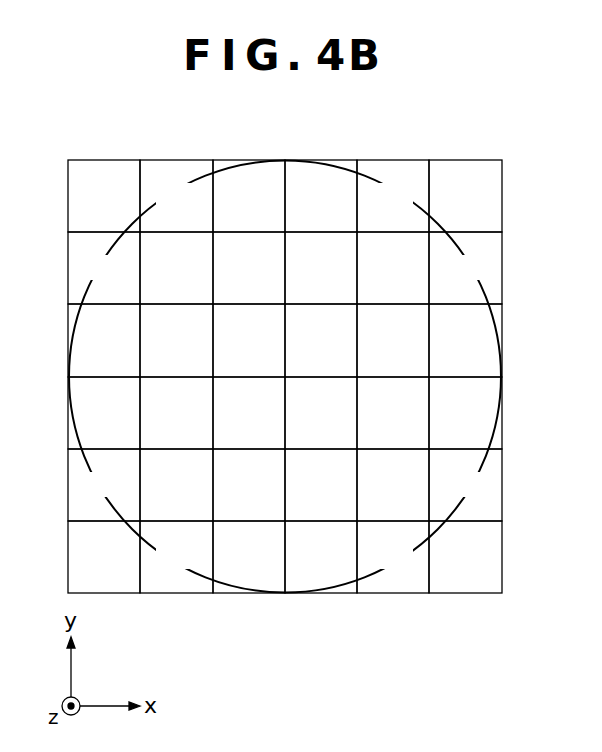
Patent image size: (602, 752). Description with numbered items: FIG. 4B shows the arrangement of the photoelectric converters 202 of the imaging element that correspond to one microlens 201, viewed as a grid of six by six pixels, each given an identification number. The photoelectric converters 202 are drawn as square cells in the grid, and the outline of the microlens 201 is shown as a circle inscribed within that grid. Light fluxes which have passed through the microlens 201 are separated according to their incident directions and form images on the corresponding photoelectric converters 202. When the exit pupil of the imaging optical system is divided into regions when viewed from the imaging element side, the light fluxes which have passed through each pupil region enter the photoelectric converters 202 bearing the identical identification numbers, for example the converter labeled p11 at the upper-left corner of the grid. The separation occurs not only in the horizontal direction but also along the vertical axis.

The microlens 201 is at (198, 174).
The photoelectric converter 202 is at (335, 376).
The pixel p11 is at (104, 196).